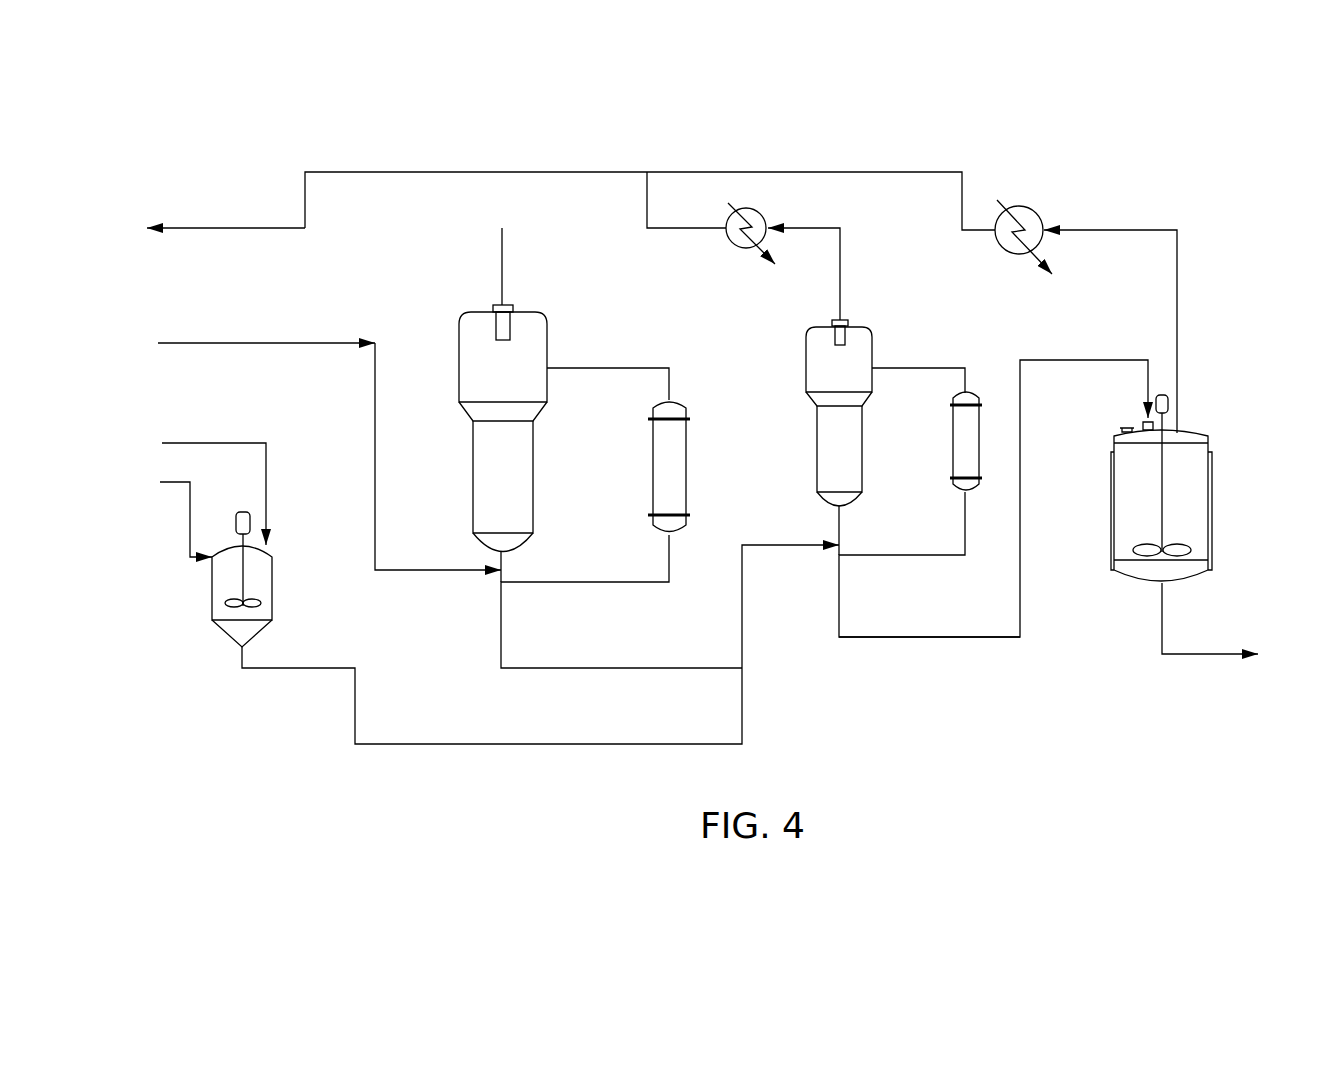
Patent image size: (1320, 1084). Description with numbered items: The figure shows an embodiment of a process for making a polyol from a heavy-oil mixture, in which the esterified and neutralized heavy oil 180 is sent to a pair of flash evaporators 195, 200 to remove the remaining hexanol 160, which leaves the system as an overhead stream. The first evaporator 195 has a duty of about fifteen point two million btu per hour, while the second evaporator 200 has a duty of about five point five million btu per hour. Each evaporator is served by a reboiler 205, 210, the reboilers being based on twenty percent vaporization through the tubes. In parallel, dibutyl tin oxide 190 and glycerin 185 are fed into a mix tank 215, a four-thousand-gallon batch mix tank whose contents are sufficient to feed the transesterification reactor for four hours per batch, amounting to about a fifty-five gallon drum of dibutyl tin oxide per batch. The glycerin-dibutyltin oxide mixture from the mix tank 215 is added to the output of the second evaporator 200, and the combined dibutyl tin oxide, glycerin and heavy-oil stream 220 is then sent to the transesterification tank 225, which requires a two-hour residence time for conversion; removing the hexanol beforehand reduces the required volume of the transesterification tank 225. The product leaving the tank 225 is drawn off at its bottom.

The hexanol 160 is at (243, 228).
The esterified and neutralized heavy oil 180 is at (227, 343).
The glycerin 185 is at (227, 443).
The dibutyl tin oxide 190 is at (170, 484).
The first flash evaporator 195 is at (533, 312).
The second flash evaporator 200 is at (858, 326).
The reboiler 205 is at (686, 478).
The reboiler 210 is at (951, 422).
The mix tank 215 is at (212, 590).
The product stream 220 is at (955, 639).
The transesterification tank 225 is at (1192, 430).